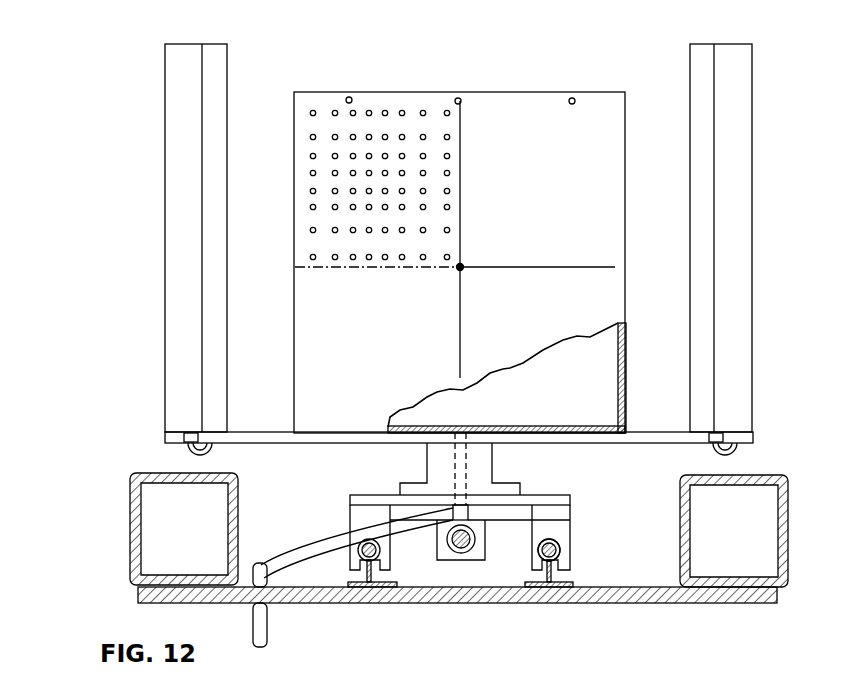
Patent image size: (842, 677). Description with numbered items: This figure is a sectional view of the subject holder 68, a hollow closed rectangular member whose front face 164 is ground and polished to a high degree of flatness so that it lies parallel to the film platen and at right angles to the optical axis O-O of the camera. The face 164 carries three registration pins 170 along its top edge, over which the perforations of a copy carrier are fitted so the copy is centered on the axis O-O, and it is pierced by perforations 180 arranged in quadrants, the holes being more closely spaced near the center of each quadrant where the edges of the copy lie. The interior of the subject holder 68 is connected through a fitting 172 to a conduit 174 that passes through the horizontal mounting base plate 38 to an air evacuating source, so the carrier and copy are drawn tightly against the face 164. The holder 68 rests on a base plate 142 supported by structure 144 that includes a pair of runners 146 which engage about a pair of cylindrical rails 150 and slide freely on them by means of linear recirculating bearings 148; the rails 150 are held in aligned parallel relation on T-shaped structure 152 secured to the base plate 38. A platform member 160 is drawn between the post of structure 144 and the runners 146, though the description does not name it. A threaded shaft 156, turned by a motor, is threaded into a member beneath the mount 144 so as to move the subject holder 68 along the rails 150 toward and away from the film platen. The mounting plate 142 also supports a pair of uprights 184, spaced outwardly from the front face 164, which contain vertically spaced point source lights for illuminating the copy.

The horizontal mounting base plate 38 is at (662, 600).
The subject holder 68 is at (460, 74).
The base plate 142 is at (598, 440).
The supporting structure 144 is at (426, 463).
The runners 146 is at (350, 527).
The linear recirculating bearings 148 is at (381, 552).
The cylindrical rails 150 is at (560, 557).
The T-shaped structure 152 is at (363, 590).
The threaded shaft 156 is at (464, 548).
The platform 160 is at (557, 496).
The subject holder face 164 is at (598, 92).
The registration pins 170 is at (348, 97).
The fitting 172 is at (467, 458).
The conduit 174 is at (306, 543).
The perforations 180 is at (314, 262).
The uprights 184 is at (165, 150).
The optical axis O- O is at (462, 266).